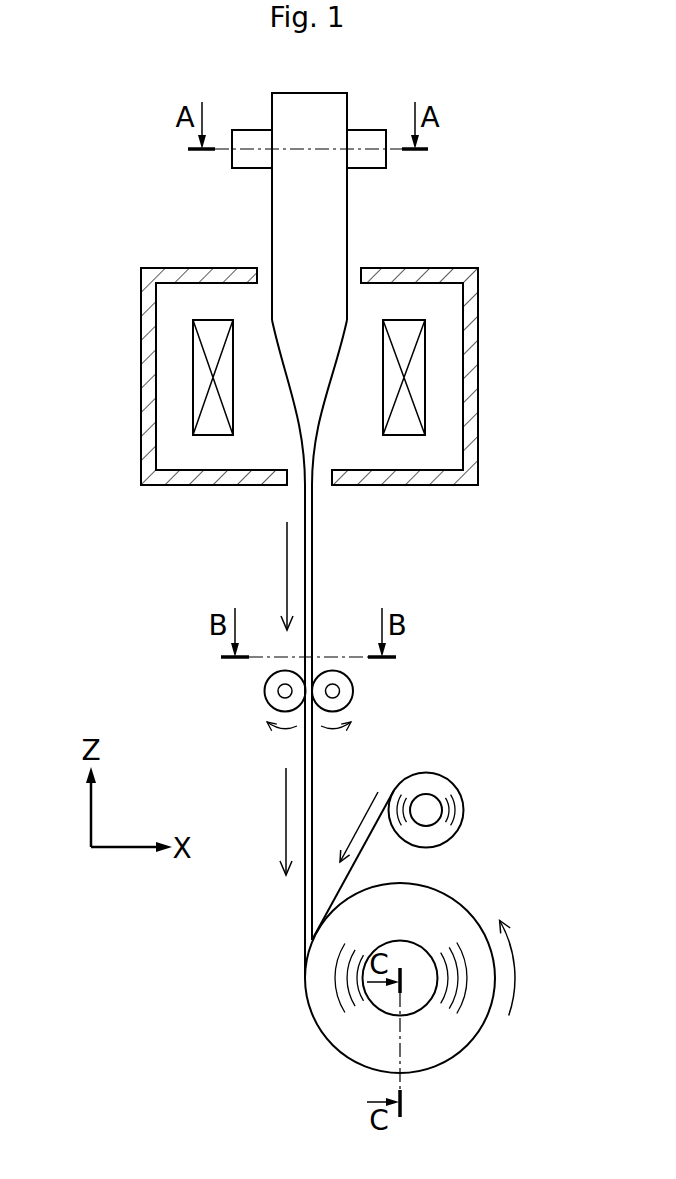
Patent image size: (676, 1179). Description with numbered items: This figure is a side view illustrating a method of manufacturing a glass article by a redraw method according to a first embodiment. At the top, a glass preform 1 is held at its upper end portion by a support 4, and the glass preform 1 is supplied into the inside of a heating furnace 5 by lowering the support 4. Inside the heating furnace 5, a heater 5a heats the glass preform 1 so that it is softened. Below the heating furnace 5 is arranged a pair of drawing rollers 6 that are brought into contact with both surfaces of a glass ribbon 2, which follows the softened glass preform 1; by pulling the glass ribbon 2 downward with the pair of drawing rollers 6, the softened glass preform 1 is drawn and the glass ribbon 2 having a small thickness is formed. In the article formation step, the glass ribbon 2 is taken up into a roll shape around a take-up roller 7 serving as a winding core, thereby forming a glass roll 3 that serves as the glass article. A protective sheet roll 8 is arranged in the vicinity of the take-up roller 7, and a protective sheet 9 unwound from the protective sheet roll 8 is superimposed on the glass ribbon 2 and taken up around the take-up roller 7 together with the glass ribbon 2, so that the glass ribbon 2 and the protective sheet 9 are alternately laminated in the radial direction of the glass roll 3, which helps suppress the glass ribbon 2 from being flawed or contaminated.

The glass preform 1 is at (330, 216).
The glass ribbon 2 is at (313, 765).
The glass roll 3 is at (462, 1064).
The support 4 is at (255, 135).
The heating furnace 5 is at (470, 312).
The heater 5a is at (202, 378).
The drawing rollers 6 is at (263, 689).
The take-up roller 7 is at (418, 963).
The protective sheet roll 8 is at (463, 772).
The protective sheet 9 is at (365, 845).